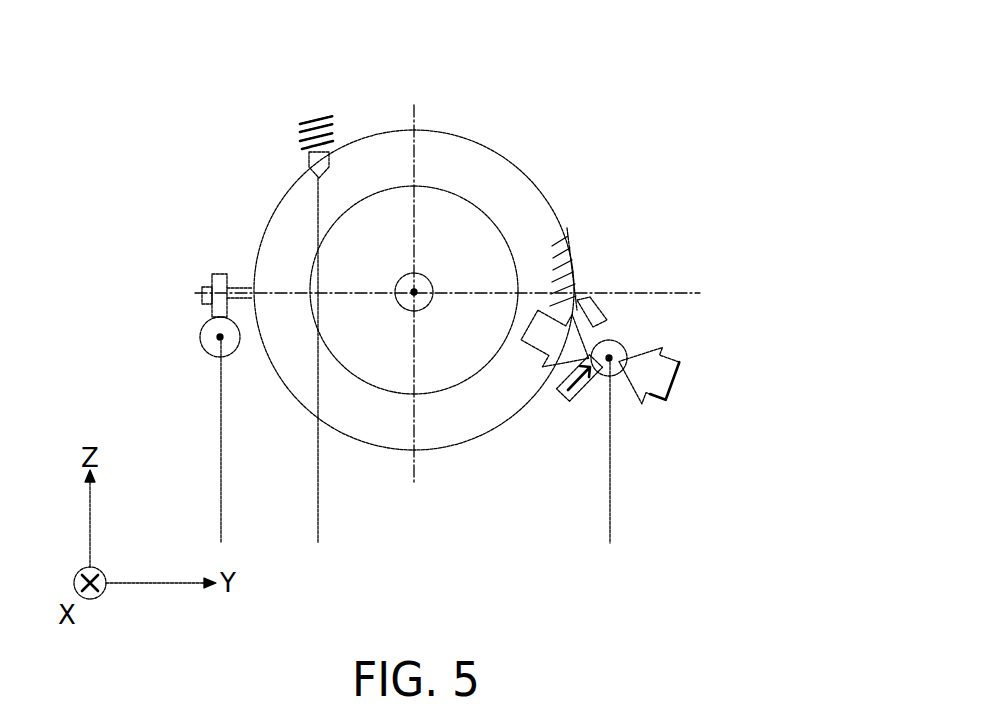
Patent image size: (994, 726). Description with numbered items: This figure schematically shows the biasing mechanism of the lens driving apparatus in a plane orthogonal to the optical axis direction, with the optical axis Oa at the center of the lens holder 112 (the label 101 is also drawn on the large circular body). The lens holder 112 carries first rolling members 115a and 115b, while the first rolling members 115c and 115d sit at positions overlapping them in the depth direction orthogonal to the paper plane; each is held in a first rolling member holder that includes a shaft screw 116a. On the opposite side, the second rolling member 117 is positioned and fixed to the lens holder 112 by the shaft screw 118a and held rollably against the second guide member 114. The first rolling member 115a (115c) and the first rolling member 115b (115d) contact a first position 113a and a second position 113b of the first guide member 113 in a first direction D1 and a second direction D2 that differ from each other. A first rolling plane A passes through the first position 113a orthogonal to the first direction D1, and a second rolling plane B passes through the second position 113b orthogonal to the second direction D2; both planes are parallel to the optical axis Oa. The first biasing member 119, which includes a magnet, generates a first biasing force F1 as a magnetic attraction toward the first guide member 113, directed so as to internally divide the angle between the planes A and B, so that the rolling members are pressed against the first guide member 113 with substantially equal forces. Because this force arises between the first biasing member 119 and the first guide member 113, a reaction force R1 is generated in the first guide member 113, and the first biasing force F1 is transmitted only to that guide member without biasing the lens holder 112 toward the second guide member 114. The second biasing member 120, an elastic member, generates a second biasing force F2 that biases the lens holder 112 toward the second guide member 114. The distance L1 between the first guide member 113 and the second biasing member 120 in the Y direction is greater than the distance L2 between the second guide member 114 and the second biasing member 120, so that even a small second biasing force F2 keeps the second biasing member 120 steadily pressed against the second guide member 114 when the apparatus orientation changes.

The drive pulley 101 is at (443, 370).
The lens holder 112 is at (447, 450).
The first guide member 113 is at (645, 348).
The first position 113a is at (612, 330).
The second position 113b is at (597, 370).
The second guide member 114 is at (205, 340).
The first rolling member 115a is at (590, 308).
The first rolling member 115b is at (583, 372).
The first rolling member 115c is at (628, 188).
The first rolling member 115d is at (657, 560).
The shaft screw 116a is at (607, 308).
The second rolling member 117 is at (210, 305).
The shaft screw 118a is at (210, 296).
The first biasing member 119 is at (529, 345).
The second biasing member 120 is at (310, 145).
The first biasing force F1 is at (548, 318).
The second biasing force F2 is at (312, 163).
The first direction D1 is at (596, 333).
The second direction D2 is at (570, 386).
The reaction force R1 is at (670, 368).
The first rolling plane A is at (622, 330).
The second rolling plane B is at (616, 376).
The optical axis Oa is at (413, 318).
The distance L1 is at (610, 534).
The distance L2 is at (221, 534).